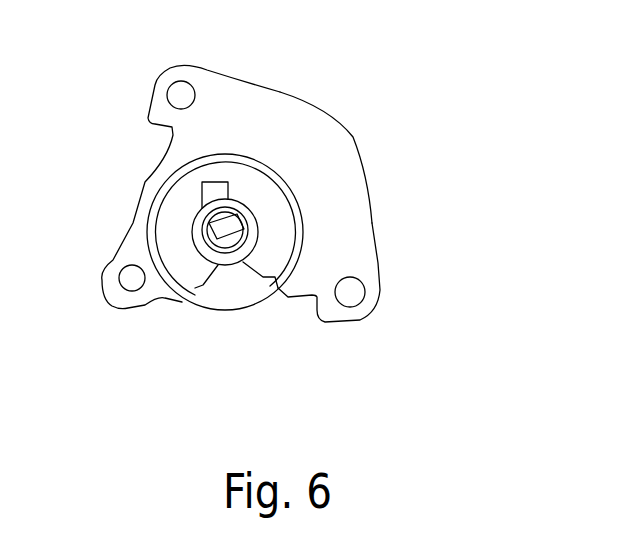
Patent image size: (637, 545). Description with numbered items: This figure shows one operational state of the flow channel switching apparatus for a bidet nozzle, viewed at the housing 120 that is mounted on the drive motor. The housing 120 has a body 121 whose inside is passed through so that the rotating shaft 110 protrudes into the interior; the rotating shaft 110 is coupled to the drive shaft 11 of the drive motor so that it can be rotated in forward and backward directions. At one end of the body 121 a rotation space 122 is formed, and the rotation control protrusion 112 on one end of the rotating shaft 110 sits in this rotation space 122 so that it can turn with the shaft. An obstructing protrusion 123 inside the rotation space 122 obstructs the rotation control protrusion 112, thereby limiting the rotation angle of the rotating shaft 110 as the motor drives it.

The drive shaft 11 is at (225, 229).
The rotating shaft 110 is at (191, 206).
The rotation control protrusion 112 is at (215, 187).
The housing 120 is at (376, 217).
The body 121 is at (332, 170).
The rotation space 122 is at (181, 236).
The obstructing protrusion 123 is at (231, 273).